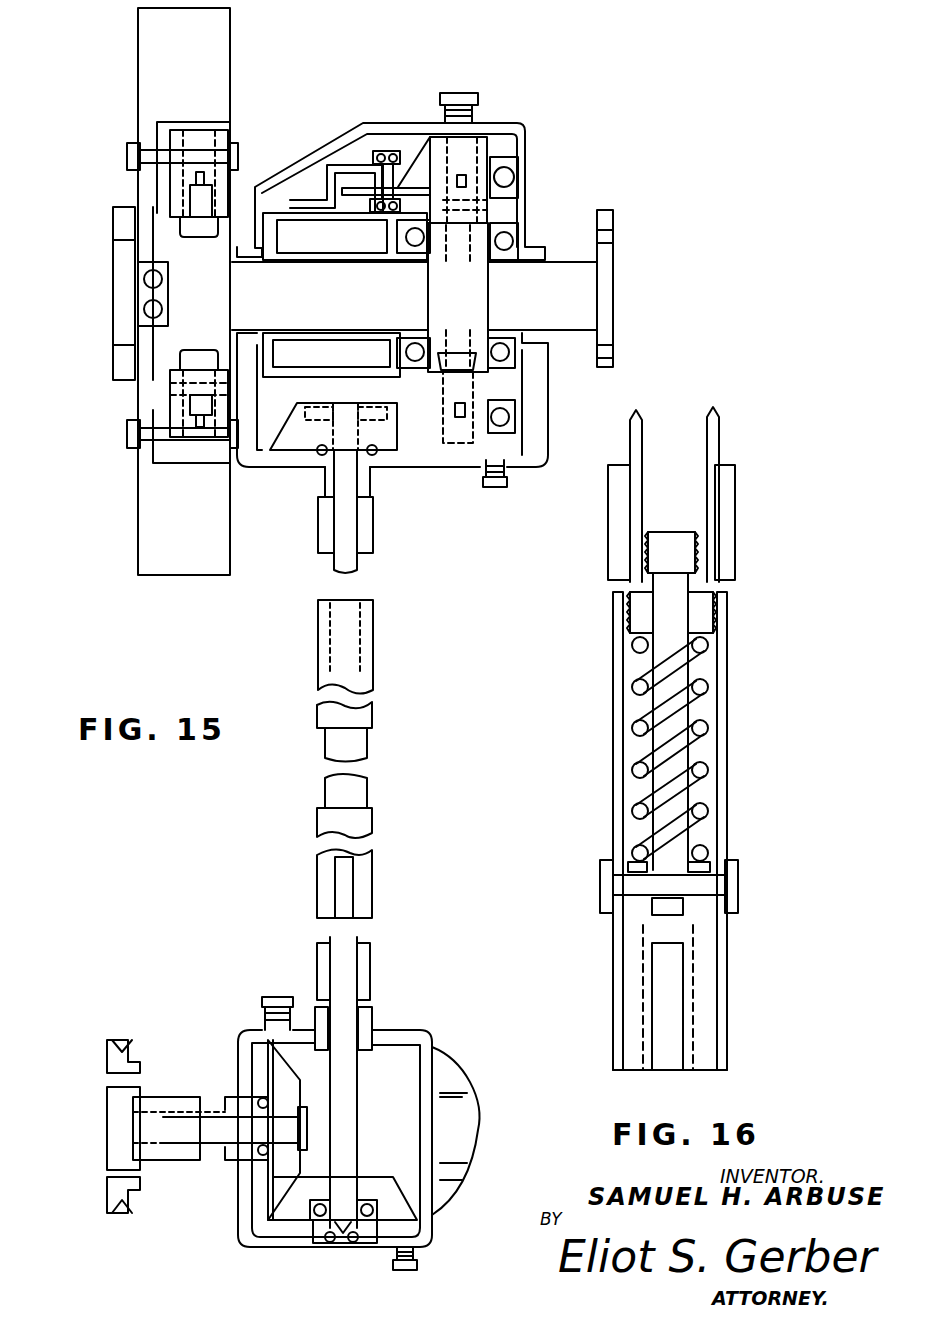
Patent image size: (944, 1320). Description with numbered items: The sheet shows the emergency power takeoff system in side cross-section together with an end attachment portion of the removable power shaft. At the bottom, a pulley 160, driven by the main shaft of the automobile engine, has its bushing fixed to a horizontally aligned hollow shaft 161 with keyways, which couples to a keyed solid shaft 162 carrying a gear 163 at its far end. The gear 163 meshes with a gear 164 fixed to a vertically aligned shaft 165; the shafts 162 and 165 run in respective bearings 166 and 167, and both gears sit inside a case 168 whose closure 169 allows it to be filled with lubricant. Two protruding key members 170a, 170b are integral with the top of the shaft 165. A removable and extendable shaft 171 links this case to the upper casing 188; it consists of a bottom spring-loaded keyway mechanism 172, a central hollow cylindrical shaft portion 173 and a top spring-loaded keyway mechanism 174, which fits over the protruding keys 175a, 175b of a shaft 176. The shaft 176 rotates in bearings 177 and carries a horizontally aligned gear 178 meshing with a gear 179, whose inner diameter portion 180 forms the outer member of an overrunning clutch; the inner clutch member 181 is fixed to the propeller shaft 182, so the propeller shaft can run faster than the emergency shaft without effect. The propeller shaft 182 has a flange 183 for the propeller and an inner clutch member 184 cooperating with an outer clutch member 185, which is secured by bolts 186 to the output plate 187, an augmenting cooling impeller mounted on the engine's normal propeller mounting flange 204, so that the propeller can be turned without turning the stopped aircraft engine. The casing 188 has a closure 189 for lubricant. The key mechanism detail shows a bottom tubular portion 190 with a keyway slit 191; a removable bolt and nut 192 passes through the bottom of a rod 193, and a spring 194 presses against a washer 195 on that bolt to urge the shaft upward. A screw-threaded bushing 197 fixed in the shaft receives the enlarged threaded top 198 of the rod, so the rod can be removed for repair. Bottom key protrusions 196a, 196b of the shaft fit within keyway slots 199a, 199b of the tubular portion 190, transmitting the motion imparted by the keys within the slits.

In FIG. 15, the pulley 160 is at (118, 1068).
In FIG. 15, the hollow shaft 161 is at (163, 1097).
In FIG. 15, the solid shaft 162 is at (212, 1108).
In FIG. 15, the gear 163 is at (287, 1172).
In FIG. 15, the gear 164 is at (398, 1210).
In FIG. 15, the vertically aligned shaft 165 is at (350, 1073).
In FIG. 15, the bearing 166 is at (257, 1155).
In FIG. 15, the bearing 167 is at (318, 1227).
In FIG. 15, the case 168 is at (432, 1032).
In FIG. 15, the closure 169 is at (275, 995).
In FIG. 15, the key member 170a is at (317, 957).
In FIG. 15, the key member 170b is at (372, 962).
In FIG. 15, the removable and extendable shaft 171 is at (291, 788).
In FIG. 16, the removable and extendable shaft 171 is at (720, 435).
In FIG. 15, the bottom spring-loaded keyway mechanism 172 is at (373, 870).
In FIG. 15, the central hollow elongated cylindrical shaft portion 173 is at (367, 742).
In FIG. 15, the top spring-loaded keyway mechanism 174 is at (373, 662).
In FIG. 15, the protruding key 175a is at (318, 540).
In FIG. 15, the protruding key 175b is at (373, 540).
In FIG. 15, the shaft 176 is at (350, 560).
In FIG. 15, the bearings 177 is at (327, 385).
In FIG. 15, the gear 178 is at (393, 437).
In FIG. 15, the gear 179 is at (432, 430).
In FIG. 15, the inner diameter portion 180 is at (465, 398).
In FIG. 15, the inner member of the overrunning clutch 181 is at (470, 255).
In FIG. 15, the propeller shaft 182 is at (553, 280).
In FIG. 15, the flange 183 is at (615, 283).
In FIG. 15, the overrunning clutch member 184 is at (190, 262).
In FIG. 15, the outer overrunning clutch member 185 is at (170, 385).
In FIG. 15, the bolts 186 is at (127, 436).
In FIG. 15, the output plate 187 is at (138, 525).
In FIG. 15, the casing 188 is at (515, 140).
In FIG. 15, the closure 189 is at (462, 100).
In FIG. 16, the bottom cylindrical and tubular portion 190 is at (727, 963).
In FIG. 16, the keyway slit 191 is at (665, 993).
In FIG. 16, the bolt and nut 192 is at (705, 885).
In FIG. 16, the rod 193 is at (680, 803).
In FIG. 16, the spring 194 is at (700, 683).
In FIG. 16, the washer 195 is at (635, 865).
In FIG. 16, the bottom key protrusion 196a is at (608, 500).
In FIG. 16, the bottom key protrusion 196b is at (737, 505).
In FIG. 16, the screw-threaded bushing 197 is at (700, 608).
In FIG. 16, the screw threaded top 198 is at (670, 548).
In FIG. 16, the keyway slot 199a is at (613, 697).
In FIG. 16, the keyway slot 199b is at (727, 718).
In FIG. 15, the propeller mounting flange 204 is at (113, 283).